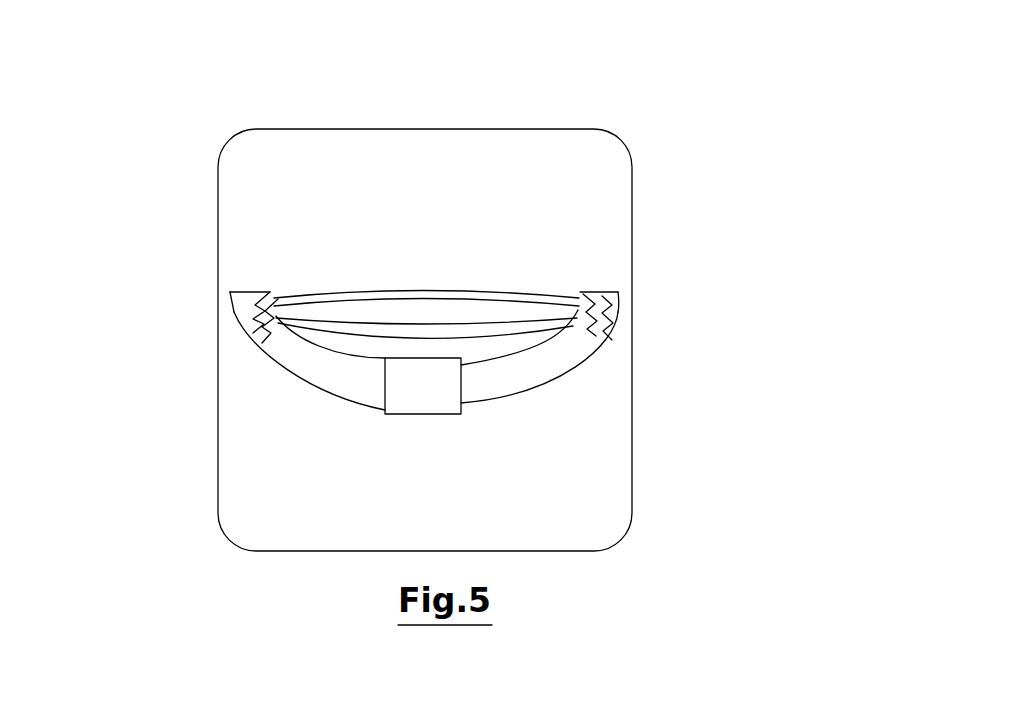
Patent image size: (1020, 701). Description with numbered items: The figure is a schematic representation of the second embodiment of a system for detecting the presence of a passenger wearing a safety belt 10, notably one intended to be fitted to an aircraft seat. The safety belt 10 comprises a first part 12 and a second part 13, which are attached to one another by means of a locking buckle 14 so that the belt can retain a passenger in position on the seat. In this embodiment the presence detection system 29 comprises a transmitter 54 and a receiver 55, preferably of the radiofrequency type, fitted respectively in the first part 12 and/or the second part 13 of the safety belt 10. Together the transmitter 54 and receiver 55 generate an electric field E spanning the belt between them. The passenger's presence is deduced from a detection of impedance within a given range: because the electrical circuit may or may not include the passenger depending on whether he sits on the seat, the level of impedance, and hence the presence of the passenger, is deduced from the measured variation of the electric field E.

The safety belt 10 is at (327, 230).
The presence detection system 29 is at (550, 278).
The electric field E is at (358, 290).
The receiver 55 is at (237, 316).
The transmitter 54 is at (620, 315).
The first part 12 is at (313, 368).
The second part 13 is at (540, 363).
The locking buckle 14 is at (420, 416).